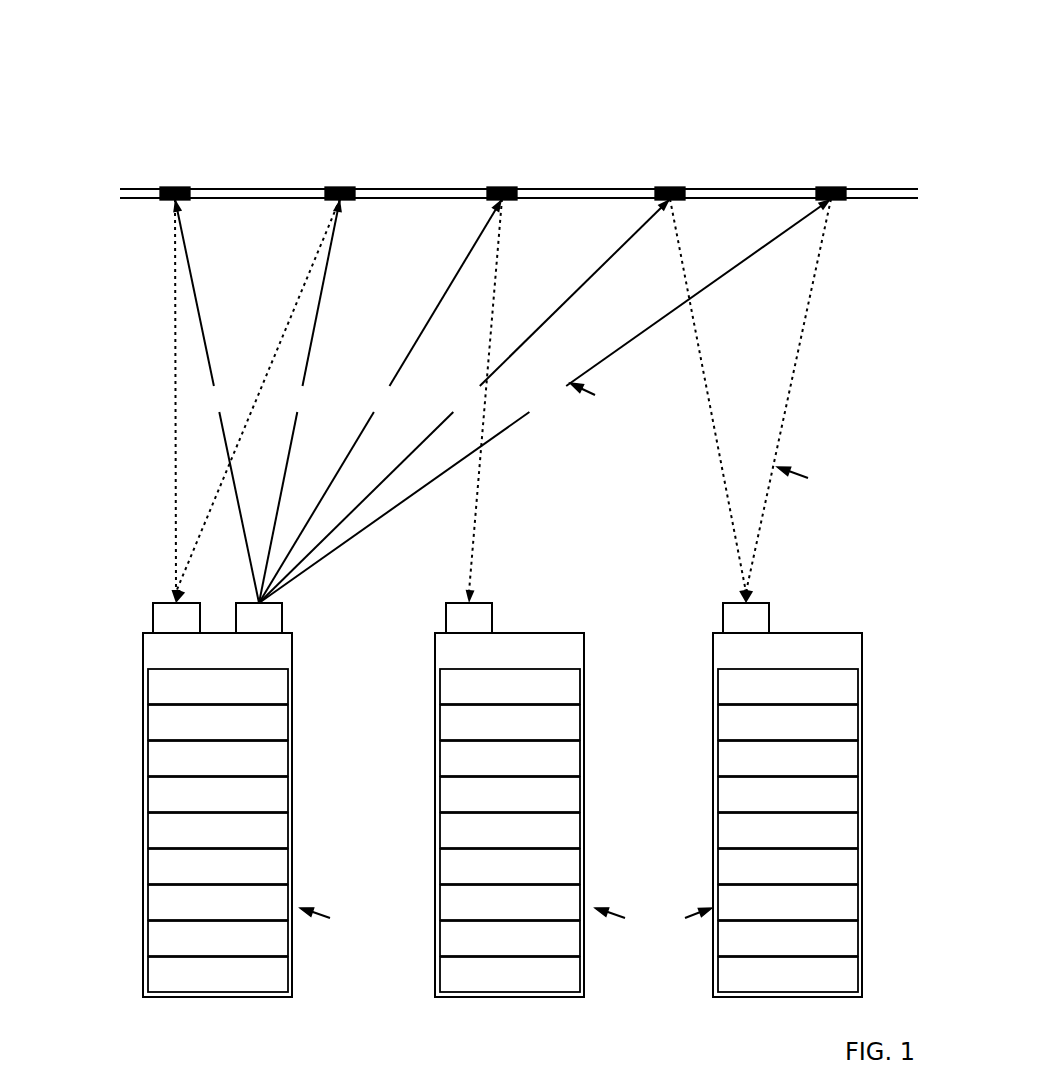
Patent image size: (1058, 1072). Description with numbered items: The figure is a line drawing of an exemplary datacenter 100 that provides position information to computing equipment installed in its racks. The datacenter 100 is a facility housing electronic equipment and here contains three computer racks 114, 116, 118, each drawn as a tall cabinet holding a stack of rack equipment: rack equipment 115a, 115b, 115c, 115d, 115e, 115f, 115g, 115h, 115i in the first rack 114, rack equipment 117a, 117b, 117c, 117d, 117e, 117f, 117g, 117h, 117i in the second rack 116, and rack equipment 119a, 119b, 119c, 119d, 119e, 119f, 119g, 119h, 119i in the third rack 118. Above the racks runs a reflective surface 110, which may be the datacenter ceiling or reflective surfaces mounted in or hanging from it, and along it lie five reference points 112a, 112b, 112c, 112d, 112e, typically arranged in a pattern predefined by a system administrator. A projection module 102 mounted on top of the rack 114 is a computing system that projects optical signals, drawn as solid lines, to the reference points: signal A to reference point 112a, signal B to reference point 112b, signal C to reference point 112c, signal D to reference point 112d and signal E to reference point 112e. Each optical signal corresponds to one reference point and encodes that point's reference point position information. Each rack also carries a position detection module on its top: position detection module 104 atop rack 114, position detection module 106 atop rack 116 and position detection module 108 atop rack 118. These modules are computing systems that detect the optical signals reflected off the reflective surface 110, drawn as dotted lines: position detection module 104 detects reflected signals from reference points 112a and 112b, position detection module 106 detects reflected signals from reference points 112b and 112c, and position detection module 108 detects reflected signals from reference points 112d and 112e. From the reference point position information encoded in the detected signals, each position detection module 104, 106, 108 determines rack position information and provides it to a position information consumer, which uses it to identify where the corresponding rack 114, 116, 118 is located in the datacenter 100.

The datacenter 100 is at (296, 39).
The reflective surface 110 is at (187, 151).
The reference point 112a is at (190, 188).
The reference point 112b is at (355, 188).
The reference point 112c is at (517, 188).
The reference point 112d is at (685, 188).
The reference point 112e is at (845, 188).
The projection module 102 is at (323, 614).
The position detection module 104 is at (162, 628).
The position detection module 106 is at (528, 614).
The position detection module 108 is at (806, 614).
The rack 114 is at (254, 660).
The rack 116 is at (546, 660).
The rack 118 is at (824, 660).
The rack equipment 115a is at (199, 696).
The rack equipment 115b is at (199, 732).
The rack equipment 115c is at (199, 768).
The rack equipment 115d is at (199, 804).
The rack equipment 115e is at (199, 840).
The rack equipment 115f is at (201, 876).
The rack equipment 115g is at (199, 912).
The rack equipment 115h is at (199, 948).
The rack equipment 115i is at (203, 984).
The rack equipment 117a is at (491, 696).
The rack equipment 117b is at (491, 732).
The rack equipment 117c is at (491, 768).
The rack equipment 117d is at (491, 804).
The rack equipment 117e is at (491, 840).
The rack equipment 117f is at (493, 876).
The rack equipment 117g is at (491, 912).
The rack equipment 117h is at (491, 948).
The rack equipment 117i is at (495, 984).
The rack equipment 119a is at (769, 696).
The rack equipment 119b is at (769, 732).
The rack equipment 119c is at (769, 768).
The rack equipment 119d is at (769, 804).
The rack equipment 119e is at (769, 840).
The rack equipment 119f is at (771, 876).
The rack equipment 119g is at (769, 912).
The rack equipment 119h is at (769, 948).
The rack equipment 119i is at (773, 984).